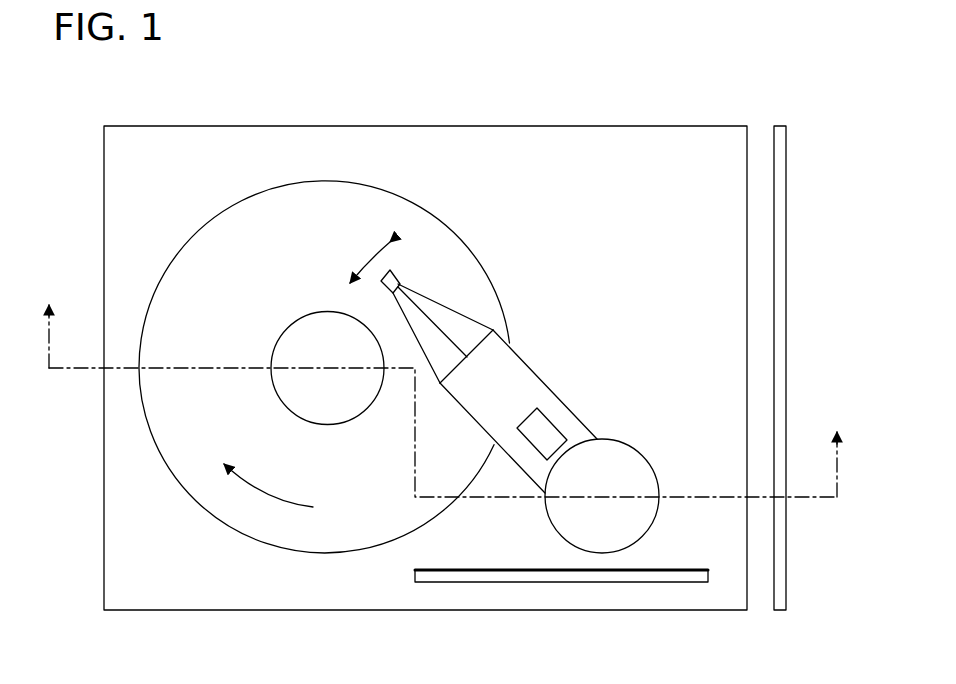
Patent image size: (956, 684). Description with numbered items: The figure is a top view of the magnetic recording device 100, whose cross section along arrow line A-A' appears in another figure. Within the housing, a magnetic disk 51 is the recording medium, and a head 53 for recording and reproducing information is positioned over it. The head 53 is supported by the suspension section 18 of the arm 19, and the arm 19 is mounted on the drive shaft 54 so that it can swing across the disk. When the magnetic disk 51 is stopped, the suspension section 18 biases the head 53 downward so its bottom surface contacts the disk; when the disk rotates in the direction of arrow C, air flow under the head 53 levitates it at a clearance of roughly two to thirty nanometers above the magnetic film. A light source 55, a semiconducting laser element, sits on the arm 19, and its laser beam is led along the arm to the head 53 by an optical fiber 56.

The magnetic recording device 100 is at (408, 107).
The magnetic disk 51 is at (417, 200).
The head 53 is at (400, 274).
The suspension section 18 is at (455, 328).
The optical fiber 56 is at (495, 383).
The arm 19 is at (532, 383).
The light source 55 is at (545, 428).
The drive shaft 54 is at (628, 460).